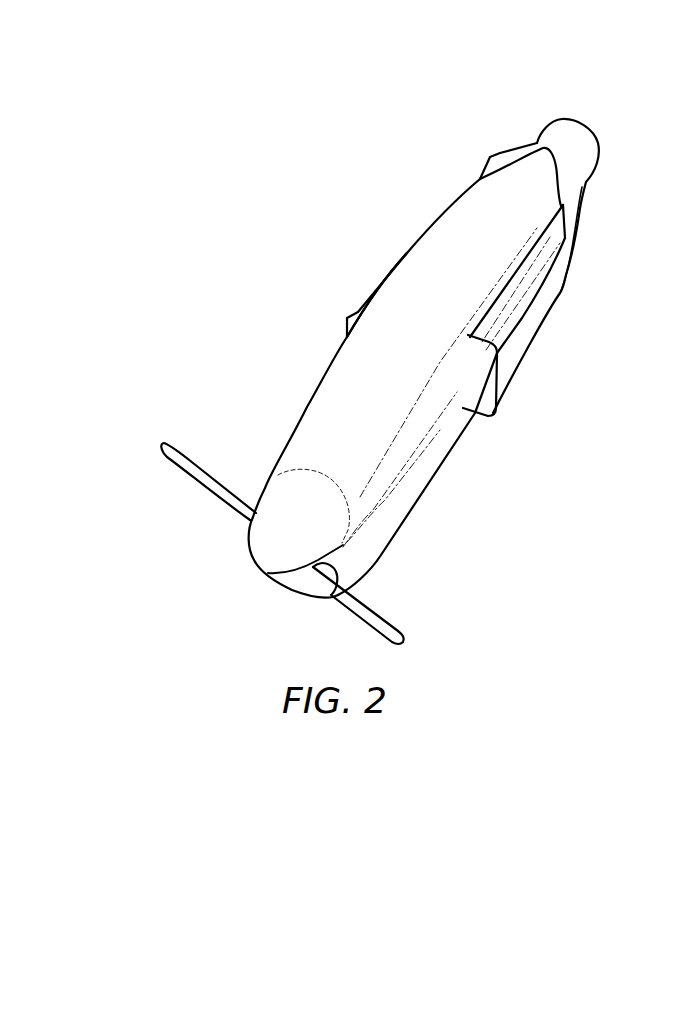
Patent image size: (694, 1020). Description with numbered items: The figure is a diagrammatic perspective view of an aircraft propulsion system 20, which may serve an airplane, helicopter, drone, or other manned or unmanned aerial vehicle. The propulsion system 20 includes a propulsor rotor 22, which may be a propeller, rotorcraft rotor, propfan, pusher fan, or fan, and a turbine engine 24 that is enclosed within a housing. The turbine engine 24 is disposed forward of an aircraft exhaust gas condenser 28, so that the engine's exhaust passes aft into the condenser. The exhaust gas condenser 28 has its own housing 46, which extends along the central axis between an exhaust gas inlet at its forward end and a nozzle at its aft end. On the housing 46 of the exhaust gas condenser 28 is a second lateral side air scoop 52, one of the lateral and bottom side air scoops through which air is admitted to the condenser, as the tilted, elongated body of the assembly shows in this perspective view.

The propulsion system 20 is at (218, 113).
The propulsor rotor 22 is at (190, 405).
The turbine engine 24 is at (429, 561).
The exhaust gas condenser 28 is at (343, 246).
The housing 46 is at (405, 226).
The second lateral side air scoop 52 is at (512, 372).